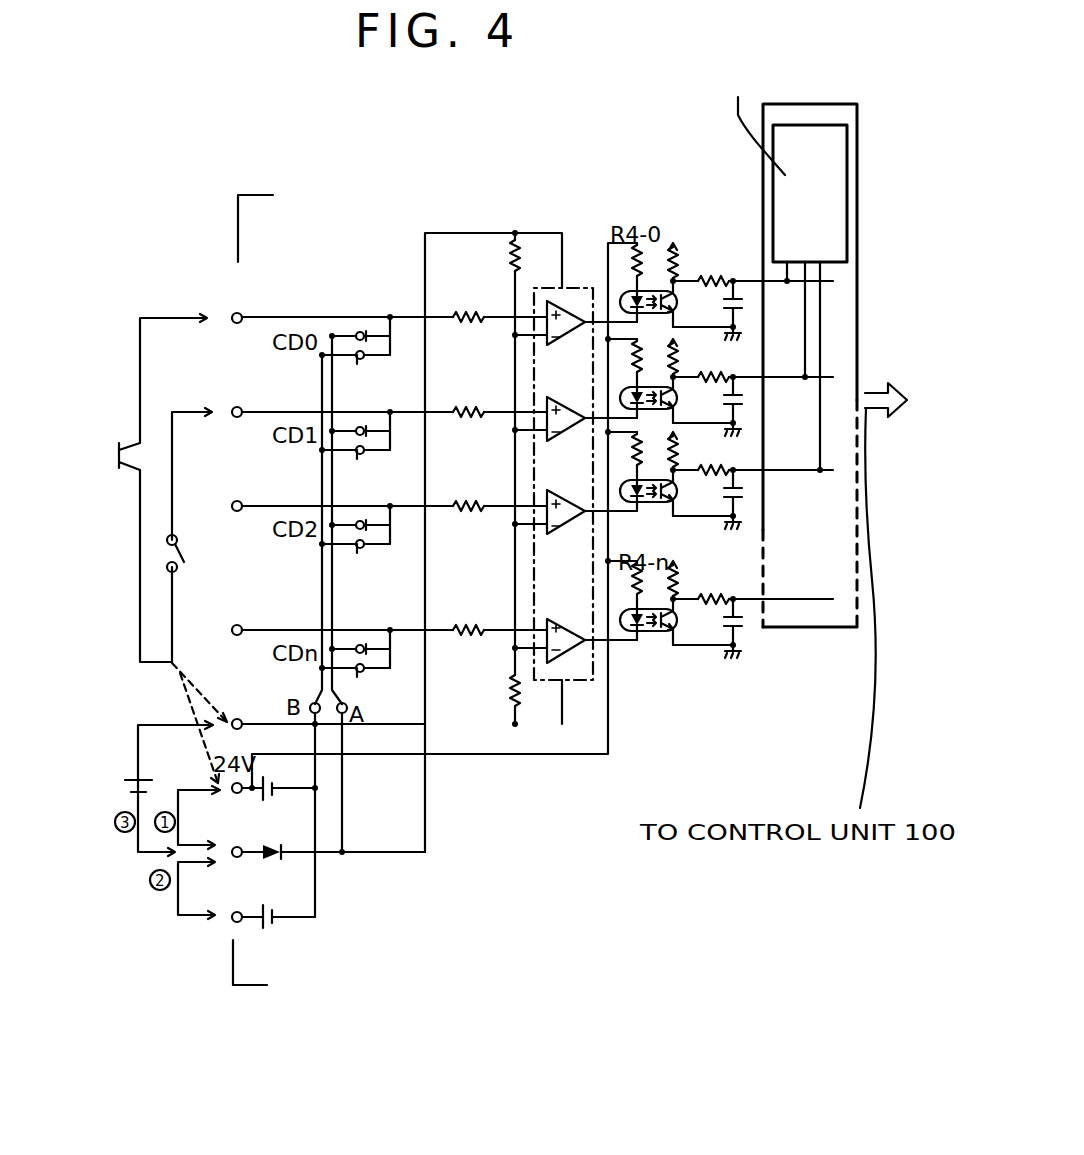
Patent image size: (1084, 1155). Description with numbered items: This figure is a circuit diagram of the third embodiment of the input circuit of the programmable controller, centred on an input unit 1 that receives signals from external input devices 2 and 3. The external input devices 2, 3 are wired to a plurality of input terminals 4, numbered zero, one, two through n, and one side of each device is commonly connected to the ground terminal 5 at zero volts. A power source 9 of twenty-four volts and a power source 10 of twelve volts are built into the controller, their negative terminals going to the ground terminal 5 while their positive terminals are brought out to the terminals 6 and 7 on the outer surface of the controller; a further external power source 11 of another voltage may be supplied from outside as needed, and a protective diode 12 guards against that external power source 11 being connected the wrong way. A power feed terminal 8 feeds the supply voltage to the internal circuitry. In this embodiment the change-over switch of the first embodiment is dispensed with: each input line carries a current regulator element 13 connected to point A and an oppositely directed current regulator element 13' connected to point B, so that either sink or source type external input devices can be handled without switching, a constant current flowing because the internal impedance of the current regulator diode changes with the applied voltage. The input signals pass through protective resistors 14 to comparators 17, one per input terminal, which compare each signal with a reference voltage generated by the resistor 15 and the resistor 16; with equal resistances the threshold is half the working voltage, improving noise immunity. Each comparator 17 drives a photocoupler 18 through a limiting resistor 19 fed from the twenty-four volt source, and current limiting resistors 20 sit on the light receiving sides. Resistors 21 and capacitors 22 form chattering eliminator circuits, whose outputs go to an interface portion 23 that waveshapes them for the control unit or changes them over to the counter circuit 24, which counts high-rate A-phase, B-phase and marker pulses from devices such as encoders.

The input unit 1 is at (233, 224).
The external input device 2 is at (119, 443).
The external input device 3 is at (167, 538).
The input terminals 4 is at (230, 314).
The 0 V terminal 5 is at (210, 700).
The terminal 6 is at (178, 790).
The terminal 7 is at (228, 920).
The power feed terminal 8 is at (230, 860).
The power source of 24 V 9 is at (280, 868).
The power source of 12 V 10 is at (273, 927).
The external power source 11 is at (122, 780).
The protective diode 12 is at (277, 800).
The current regulator element 13 is at (371, 406).
The current regulator element 13' is at (353, 438).
The protective resistors 14 is at (463, 300).
The resistor 15 is at (505, 240).
The resistor 16 is at (528, 702).
The comparators 17 is at (582, 287).
The photocouplers 18 is at (655, 283).
The limiting resistors 19 is at (645, 285).
The current limiting resistors 20 is at (687, 267).
The resistors 21 is at (715, 270).
The capacitors 22 is at (742, 287).
The interface portion 23 is at (820, 630).
The counter circuit 24 is at (857, 215).